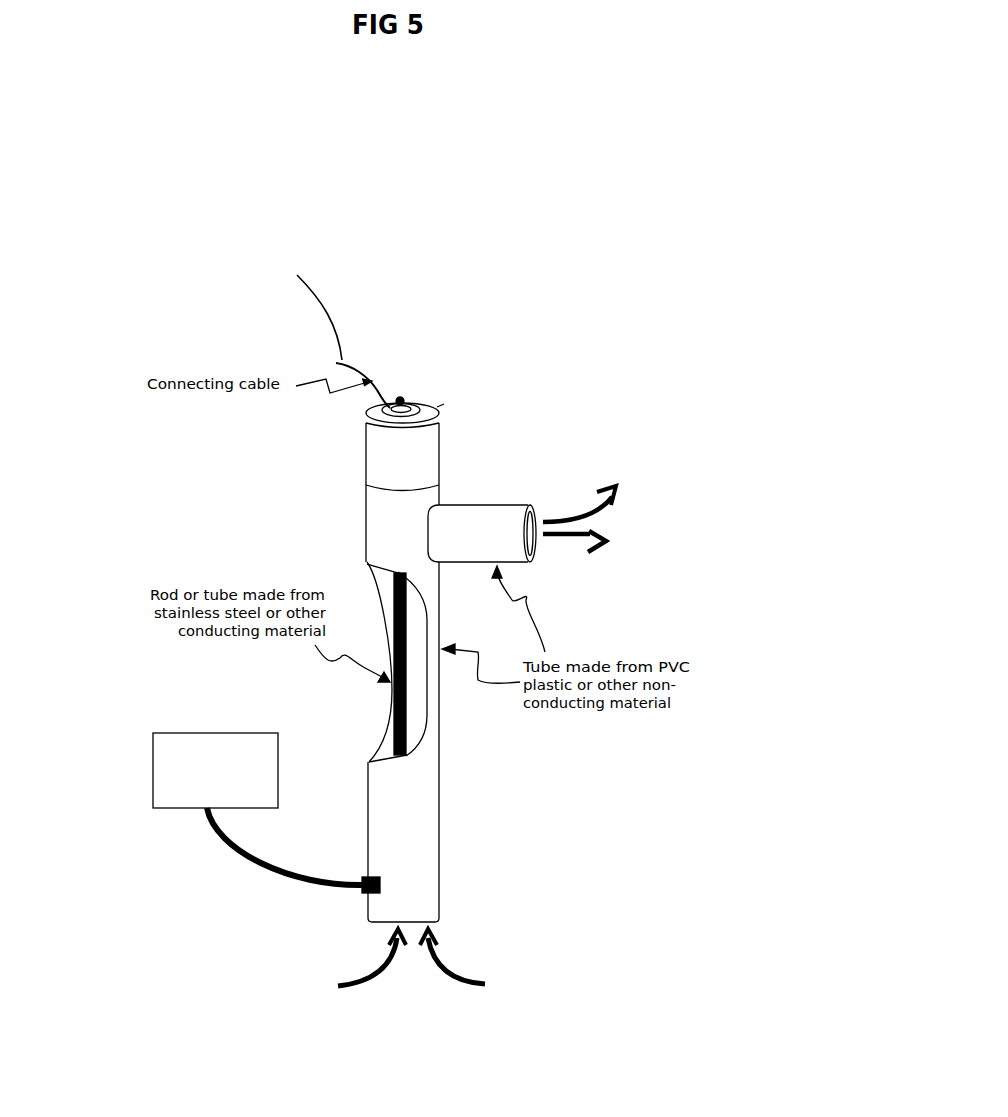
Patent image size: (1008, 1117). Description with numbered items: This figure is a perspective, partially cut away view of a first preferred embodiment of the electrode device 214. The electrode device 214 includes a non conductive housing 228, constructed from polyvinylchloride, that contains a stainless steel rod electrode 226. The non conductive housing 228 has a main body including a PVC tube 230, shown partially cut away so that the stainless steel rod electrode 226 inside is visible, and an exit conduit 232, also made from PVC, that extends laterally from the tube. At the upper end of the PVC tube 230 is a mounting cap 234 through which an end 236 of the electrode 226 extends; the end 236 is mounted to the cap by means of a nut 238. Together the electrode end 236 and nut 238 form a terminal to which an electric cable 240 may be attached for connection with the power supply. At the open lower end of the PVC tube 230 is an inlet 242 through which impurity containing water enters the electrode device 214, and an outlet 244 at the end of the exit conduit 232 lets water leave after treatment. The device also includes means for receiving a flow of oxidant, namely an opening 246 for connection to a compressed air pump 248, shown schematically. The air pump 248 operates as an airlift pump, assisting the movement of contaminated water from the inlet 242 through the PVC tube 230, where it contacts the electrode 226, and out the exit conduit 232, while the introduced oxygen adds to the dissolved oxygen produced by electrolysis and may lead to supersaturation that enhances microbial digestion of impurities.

The electrode device 214 is at (508, 411).
The stainless steel rod electrode 226 is at (390, 688).
The non conductive housing 228 is at (360, 518).
The PVC tube 230 is at (430, 793).
The exit conduit 232 is at (490, 505).
The mounting cap 234 is at (366, 405).
The end of the electrode 236 is at (403, 400).
The nut 238 is at (461, 408).
The electric cable 240 is at (320, 322).
The inlet 242 is at (378, 930).
The outlet 244 is at (540, 552).
The opening 246 is at (363, 892).
The compressed air pump 248 is at (156, 800).